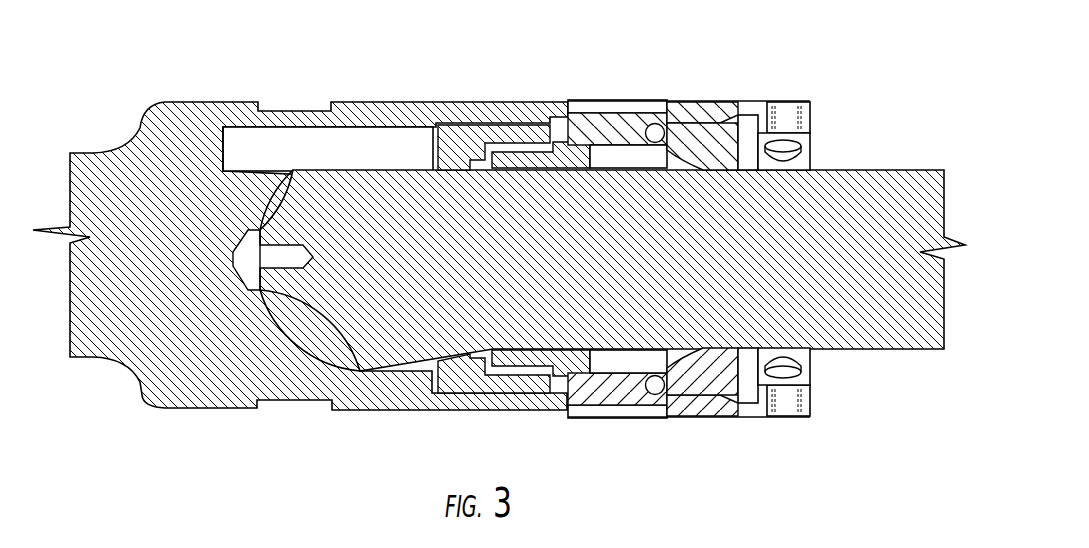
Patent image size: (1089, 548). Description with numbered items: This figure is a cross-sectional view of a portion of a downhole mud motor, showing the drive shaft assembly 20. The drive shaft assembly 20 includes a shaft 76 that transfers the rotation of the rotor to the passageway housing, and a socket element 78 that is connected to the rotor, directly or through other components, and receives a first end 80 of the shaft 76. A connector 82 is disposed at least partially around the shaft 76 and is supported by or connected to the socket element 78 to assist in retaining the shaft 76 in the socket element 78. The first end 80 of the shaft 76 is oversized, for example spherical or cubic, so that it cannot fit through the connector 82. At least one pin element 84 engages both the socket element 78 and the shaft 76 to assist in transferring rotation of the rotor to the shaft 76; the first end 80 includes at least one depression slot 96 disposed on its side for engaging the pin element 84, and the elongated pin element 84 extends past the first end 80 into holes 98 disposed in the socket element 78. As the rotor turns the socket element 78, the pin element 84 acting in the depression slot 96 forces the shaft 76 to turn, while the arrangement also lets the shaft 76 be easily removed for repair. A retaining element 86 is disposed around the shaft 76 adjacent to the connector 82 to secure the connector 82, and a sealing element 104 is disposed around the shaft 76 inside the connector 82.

The drive shaft assembly 20 is at (979, 136).
The shaft 76 is at (920, 303).
The socket element 78 is at (292, 377).
The first end 80 is at (358, 340).
The connector 82 is at (605, 392).
The pin element 84 is at (323, 147).
The retaining element 86 is at (758, 112).
The depression slot 96 is at (460, 171).
The holes 98 is at (262, 142).
The sealing element 104 is at (528, 362).